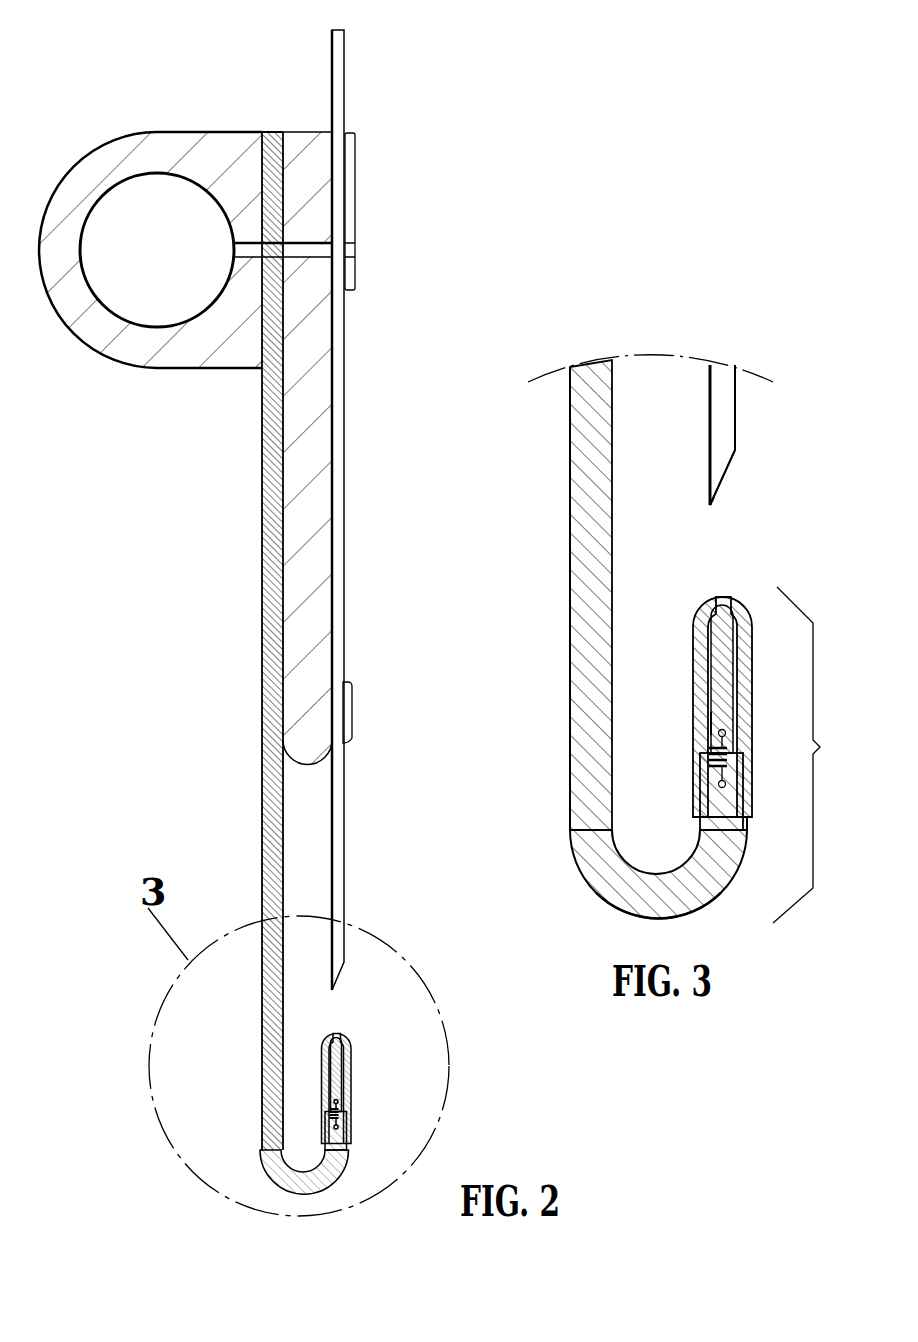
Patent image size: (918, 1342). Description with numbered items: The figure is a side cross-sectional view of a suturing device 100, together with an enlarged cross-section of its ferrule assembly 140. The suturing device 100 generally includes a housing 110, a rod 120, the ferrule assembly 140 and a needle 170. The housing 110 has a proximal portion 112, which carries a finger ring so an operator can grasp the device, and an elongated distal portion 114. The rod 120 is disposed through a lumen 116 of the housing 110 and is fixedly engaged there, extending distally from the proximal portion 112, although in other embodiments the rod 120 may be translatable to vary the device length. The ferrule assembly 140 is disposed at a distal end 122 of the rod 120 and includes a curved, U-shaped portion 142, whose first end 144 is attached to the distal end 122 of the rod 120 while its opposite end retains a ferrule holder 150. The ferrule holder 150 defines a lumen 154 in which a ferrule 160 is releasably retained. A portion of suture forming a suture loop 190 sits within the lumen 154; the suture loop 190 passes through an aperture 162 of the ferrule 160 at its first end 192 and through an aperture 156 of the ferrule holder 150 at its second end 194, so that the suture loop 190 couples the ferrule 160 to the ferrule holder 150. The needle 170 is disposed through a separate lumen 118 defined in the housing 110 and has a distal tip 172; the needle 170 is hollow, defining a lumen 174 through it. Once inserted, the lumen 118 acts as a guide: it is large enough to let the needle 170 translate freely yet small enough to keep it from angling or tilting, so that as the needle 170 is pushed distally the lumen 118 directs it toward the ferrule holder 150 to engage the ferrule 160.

In FIG. 2, the suturing device 100 is at (226, 599).
In FIG. 2, the housing 110 is at (66, 318).
In FIG. 2, the proximal portion 112 is at (77, 163).
In FIG. 2, the elongated distal portion 114 is at (272, 583).
In FIG. 2, the lumen 116 is at (272, 130).
In FIG. 2, the lumen 118 is at (336, 212).
In FIG. 2, the rod 120 is at (260, 708).
In FIG. 3, the rod 120 is at (570, 615).
In FIG. 3, the distal end 122 is at (570, 845).
In FIG. 3, the ferrule assembly 140 is at (813, 755).
In FIG. 3, the curved portion 142 is at (683, 915).
In FIG. 3, the first end 144 is at (570, 750).
In FIG. 3, the ferrule holder 150 is at (752, 763).
In FIG. 3, the lumen 154 is at (723, 594).
In FIG. 3, the aperture 156 is at (715, 791).
In FIG. 3, the ferrule 160 is at (725, 700).
In FIG. 3, the aperture 162 is at (709, 722).
In FIG. 2, the needle 170 is at (345, 838).
In FIG. 3, the needle 170 is at (735, 418).
In FIG. 3, the distal tip 172 is at (712, 506).
In FIG. 3, the lumen 174 is at (736, 474).
In FIG. 3, the suture loop 190 is at (724, 786).
In FIG. 3, the first end 192 is at (726, 733).
In FIG. 3, the second end 194 is at (746, 818).